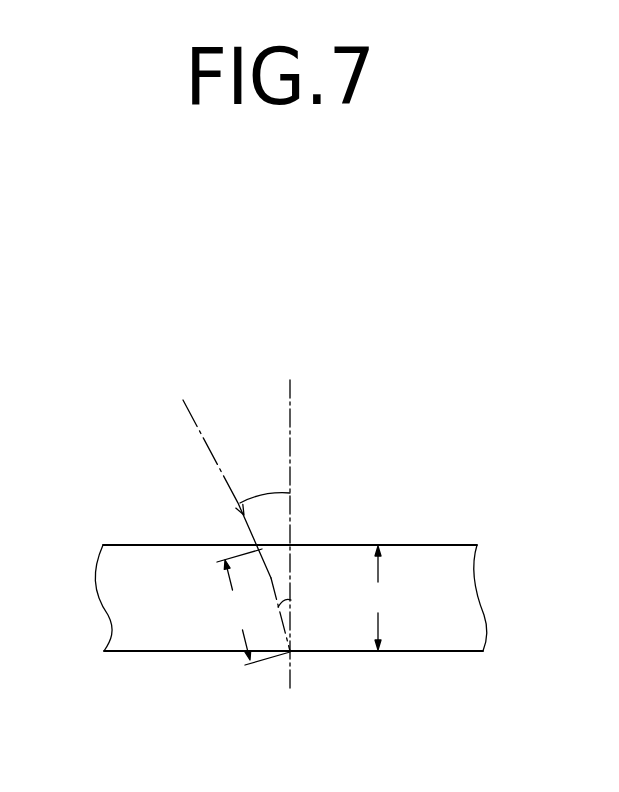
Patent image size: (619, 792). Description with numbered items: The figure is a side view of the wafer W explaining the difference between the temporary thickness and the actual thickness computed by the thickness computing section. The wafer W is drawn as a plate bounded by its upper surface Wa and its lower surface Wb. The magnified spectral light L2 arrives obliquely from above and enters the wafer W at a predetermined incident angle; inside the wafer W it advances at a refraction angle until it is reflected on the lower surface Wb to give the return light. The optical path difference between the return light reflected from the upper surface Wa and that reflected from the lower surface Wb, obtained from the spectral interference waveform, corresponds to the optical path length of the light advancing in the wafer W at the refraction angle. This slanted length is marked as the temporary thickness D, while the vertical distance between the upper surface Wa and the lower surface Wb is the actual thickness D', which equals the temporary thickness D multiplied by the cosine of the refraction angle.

The wafer W is at (428, 555).
The upper surface of the wafer Wa is at (147, 544).
The lower surface of the wafer Wb is at (157, 649).
The magnified spectral light L2 is at (228, 509).
The temporary thickness D is at (253, 607).
The actual thickness D' is at (380, 598).